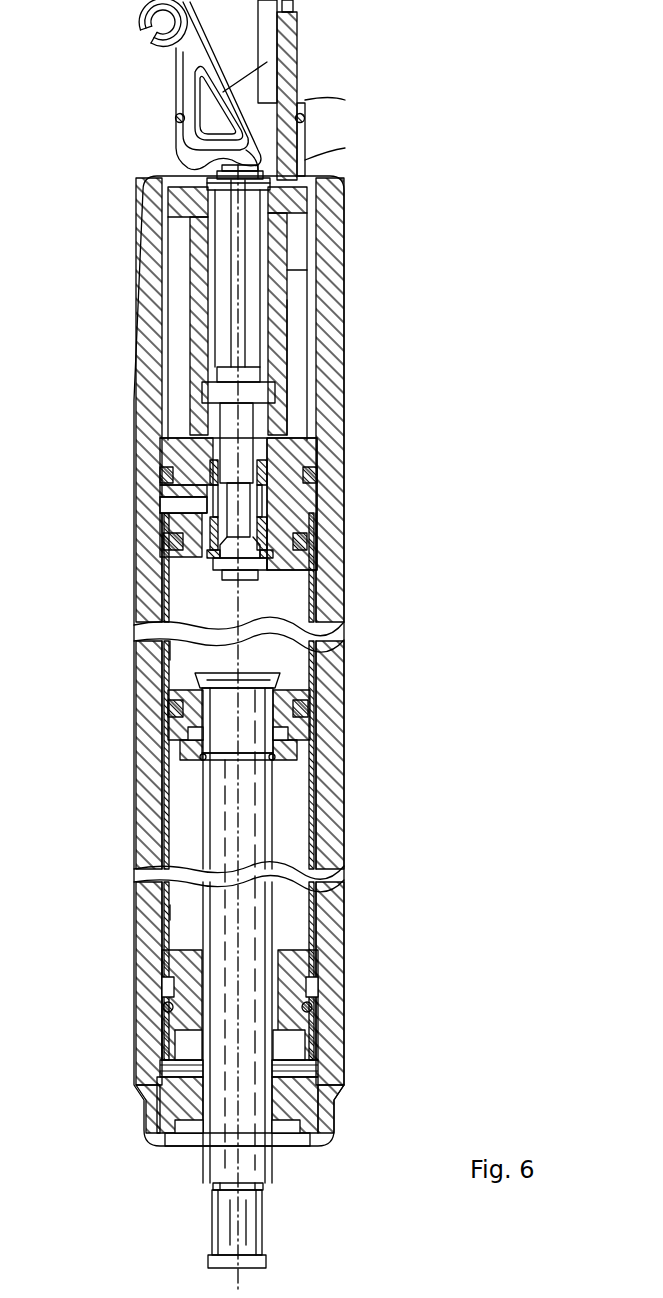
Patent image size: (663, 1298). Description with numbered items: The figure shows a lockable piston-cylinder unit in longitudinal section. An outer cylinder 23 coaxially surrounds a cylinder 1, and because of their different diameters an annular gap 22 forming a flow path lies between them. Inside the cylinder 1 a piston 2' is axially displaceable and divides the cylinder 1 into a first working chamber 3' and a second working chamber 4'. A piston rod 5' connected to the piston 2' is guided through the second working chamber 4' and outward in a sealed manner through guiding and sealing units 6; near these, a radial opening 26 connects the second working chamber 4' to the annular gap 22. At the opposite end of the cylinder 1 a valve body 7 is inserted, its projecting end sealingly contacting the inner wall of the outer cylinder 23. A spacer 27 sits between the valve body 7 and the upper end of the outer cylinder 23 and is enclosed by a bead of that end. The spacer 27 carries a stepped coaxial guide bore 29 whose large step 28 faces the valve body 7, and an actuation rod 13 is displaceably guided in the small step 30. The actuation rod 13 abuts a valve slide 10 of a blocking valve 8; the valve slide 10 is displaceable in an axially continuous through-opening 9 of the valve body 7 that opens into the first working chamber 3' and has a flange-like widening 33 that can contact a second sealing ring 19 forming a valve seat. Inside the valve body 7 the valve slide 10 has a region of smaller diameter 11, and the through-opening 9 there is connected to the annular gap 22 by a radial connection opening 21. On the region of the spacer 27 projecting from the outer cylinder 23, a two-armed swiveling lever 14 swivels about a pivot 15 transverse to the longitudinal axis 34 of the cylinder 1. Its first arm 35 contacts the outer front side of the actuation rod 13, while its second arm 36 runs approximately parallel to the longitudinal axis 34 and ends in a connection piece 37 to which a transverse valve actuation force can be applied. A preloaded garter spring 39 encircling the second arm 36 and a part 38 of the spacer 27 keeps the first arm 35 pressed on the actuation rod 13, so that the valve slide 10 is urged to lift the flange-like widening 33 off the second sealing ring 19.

The cylinder 1 is at (150, 810).
The piston 2' is at (289, 716).
The first working chamber 3' is at (119, 656).
The second working chamber 4' is at (122, 914).
The piston rod 5' is at (195, 1214).
The guiding and sealing unit 6 is at (162, 1065).
The valve body 7 is at (305, 457).
The blocking valve 8 is at (283, 512).
The through-opening 9 is at (163, 476).
The valve slide 10 is at (233, 425).
The region of smaller diameter 11 is at (267, 487).
The actuation rod 13 is at (262, 212).
The two-armed swiveling lever 14 is at (148, 108).
The pivot 15 is at (175, 165).
The second sealing ring 19 is at (170, 548).
The radial connection opening 21 is at (175, 507).
The annular gap 22 is at (168, 845).
The outer cylinder 23 is at (160, 778).
The radial opening 26 is at (165, 989).
The spacer 27 is at (310, 235).
The large step 28 is at (280, 357).
The guide bore 29 is at (287, 298).
The small step 30 is at (290, 272).
The flange-like widening 33 is at (256, 579).
The longitudinal axis 34 is at (246, 820).
The first arm 35 is at (382, 126).
The second arm 36 is at (170, 63).
The connection piece 37 is at (143, 12).
The part of the spacer 38 is at (268, 62).
The garter spring 39 is at (306, 118).